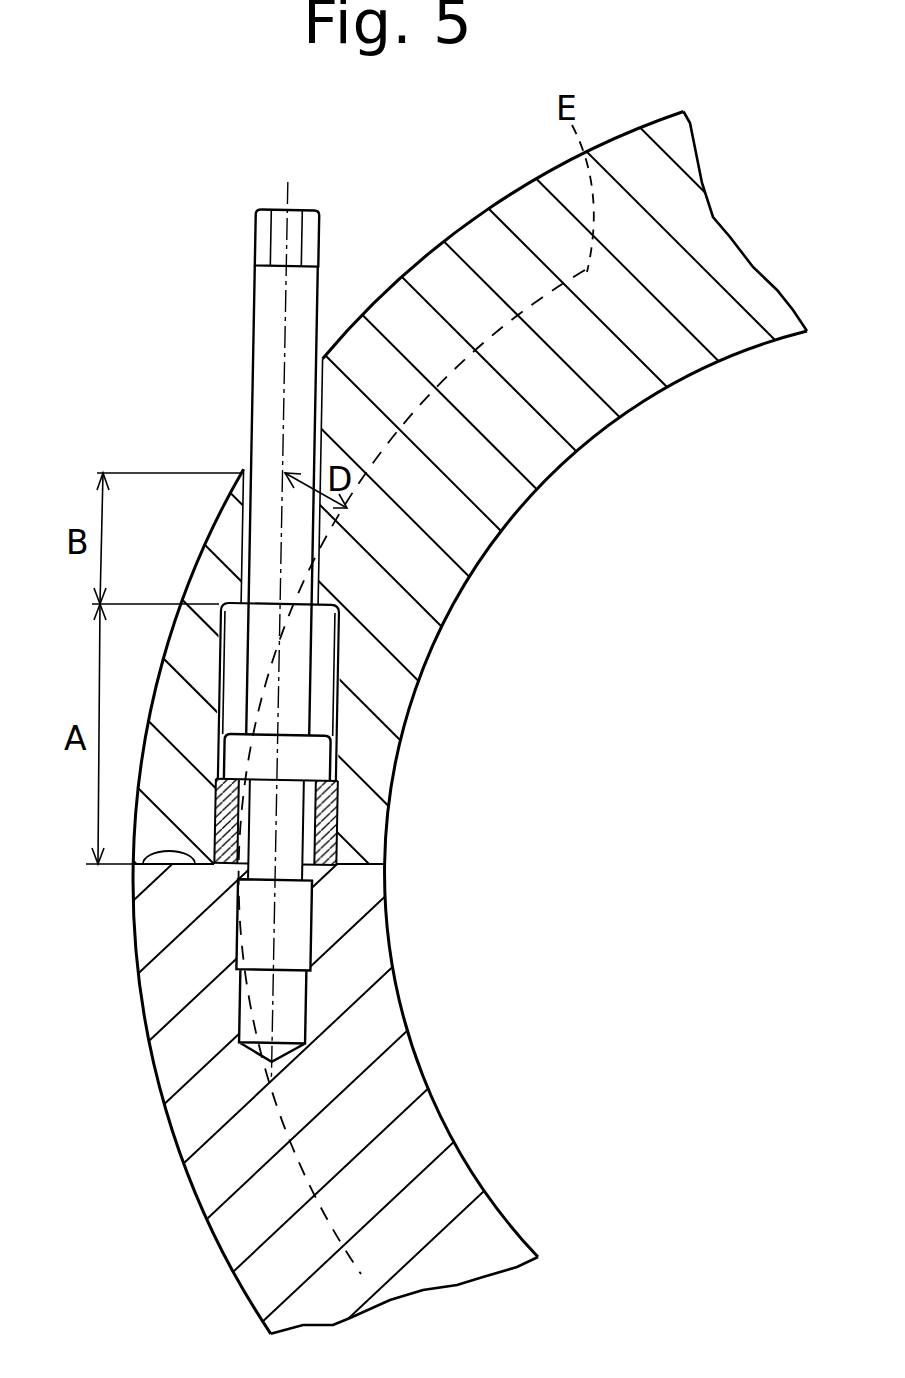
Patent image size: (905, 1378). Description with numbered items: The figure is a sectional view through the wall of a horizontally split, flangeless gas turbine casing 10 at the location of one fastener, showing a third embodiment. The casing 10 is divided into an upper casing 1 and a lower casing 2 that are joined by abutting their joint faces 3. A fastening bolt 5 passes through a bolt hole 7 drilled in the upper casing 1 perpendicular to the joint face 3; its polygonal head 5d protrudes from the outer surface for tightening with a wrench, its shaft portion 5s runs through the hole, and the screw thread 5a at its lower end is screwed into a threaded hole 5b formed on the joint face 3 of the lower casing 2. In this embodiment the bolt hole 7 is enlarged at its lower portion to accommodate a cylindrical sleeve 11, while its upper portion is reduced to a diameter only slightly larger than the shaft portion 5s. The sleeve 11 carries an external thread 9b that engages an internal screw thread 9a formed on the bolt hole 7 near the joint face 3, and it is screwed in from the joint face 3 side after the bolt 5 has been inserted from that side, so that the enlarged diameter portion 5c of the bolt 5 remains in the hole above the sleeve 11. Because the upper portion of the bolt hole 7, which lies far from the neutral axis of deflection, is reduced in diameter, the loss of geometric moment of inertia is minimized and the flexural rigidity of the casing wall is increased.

The upper casing 1 is at (592, 417).
The lower casing 2 is at (430, 1138).
The joint face 3 is at (173, 867).
The fastening bolt 5 is at (180, 358).
The screw thread 5a is at (378, 970).
The threaded hole 5b is at (313, 947).
The enlarged diameter portion 5c is at (308, 758).
The polygonal head 5d is at (292, 240).
The shaft portion 5s is at (268, 317).
The bolt hole 7 is at (338, 678).
The internal screw thread 9a is at (379, 841).
The external thread 9b is at (335, 848).
The casing 10 is at (457, 190).
The sleeve 11 is at (337, 825).